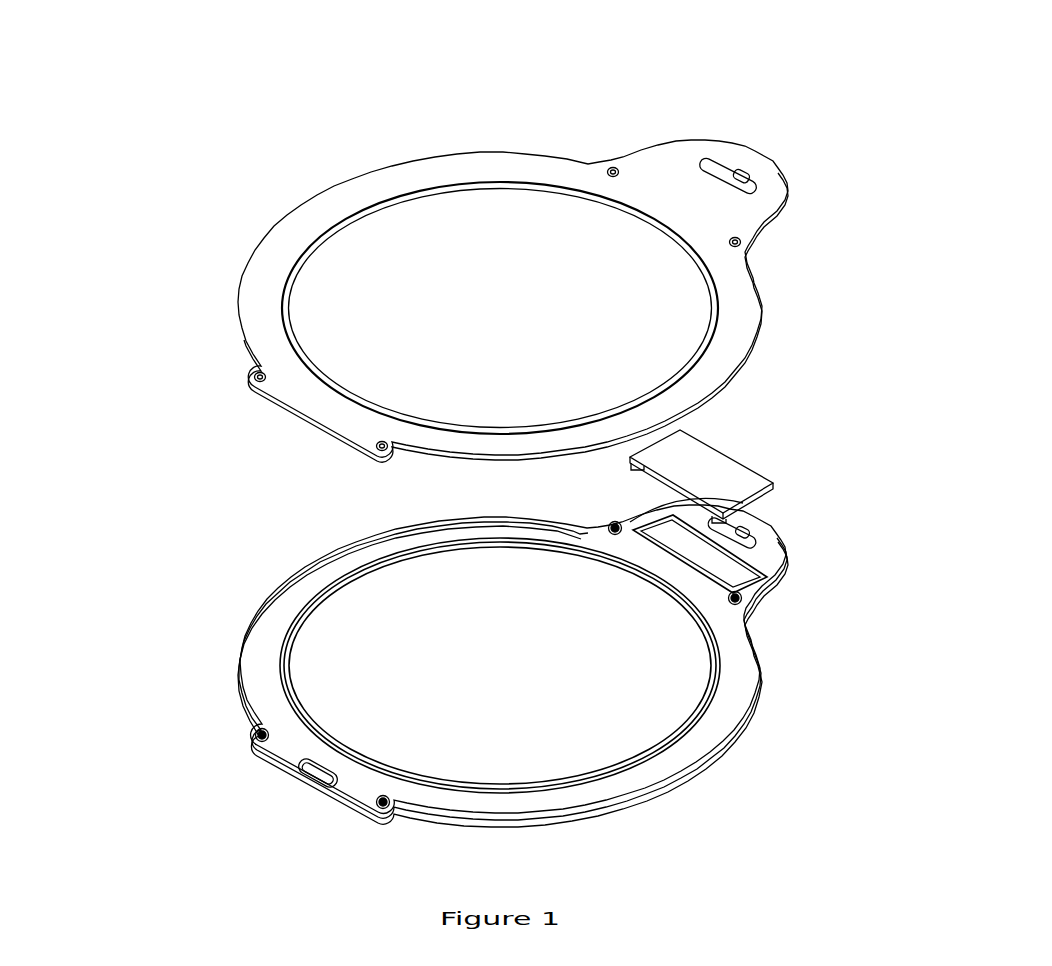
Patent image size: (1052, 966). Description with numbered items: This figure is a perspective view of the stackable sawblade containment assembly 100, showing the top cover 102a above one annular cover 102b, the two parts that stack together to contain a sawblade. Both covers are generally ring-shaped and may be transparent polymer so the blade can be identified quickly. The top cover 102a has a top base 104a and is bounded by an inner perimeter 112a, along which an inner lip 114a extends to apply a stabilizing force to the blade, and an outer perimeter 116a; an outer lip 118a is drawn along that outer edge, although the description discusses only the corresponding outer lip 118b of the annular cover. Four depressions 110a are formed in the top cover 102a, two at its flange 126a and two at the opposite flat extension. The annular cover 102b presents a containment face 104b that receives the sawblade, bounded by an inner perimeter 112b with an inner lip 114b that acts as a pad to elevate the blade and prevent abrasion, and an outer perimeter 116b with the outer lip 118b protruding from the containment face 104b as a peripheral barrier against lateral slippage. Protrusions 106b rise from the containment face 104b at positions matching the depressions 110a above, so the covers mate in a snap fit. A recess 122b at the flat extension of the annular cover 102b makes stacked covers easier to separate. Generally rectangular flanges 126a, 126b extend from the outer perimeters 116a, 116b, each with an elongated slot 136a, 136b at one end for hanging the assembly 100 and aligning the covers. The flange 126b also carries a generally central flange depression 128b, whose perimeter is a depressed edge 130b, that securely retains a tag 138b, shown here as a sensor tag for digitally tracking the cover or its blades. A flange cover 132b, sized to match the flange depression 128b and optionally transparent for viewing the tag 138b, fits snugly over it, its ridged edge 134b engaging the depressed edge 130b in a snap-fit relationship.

The stackable sawblade containment assembly 100 is at (136, 120).
The top cover 102a is at (242, 407).
The annular cover 102b is at (228, 607).
The top base 104a is at (286, 250).
The containment face 104b is at (286, 750).
The protrusion 106b is at (605, 525).
The depression 110a is at (612, 166).
The inner perimeter 112a is at (677, 357).
The inner perimeter 112b is at (672, 735).
The inner lip 114a is at (338, 228).
The inner lip 114b is at (700, 703).
The outer perimeter 116a is at (751, 367).
The outer perimeter 116b is at (745, 735).
The side wall 118a is at (728, 390).
The outer lip 118b is at (712, 765).
The recess 122b is at (313, 782).
The flange 126a is at (789, 190).
The flange 126b is at (795, 578).
The flange depression 128b is at (647, 530).
The depressed edge 130b is at (758, 586).
The flange cover 132b is at (718, 472).
The ridged edge 134b is at (748, 543).
The elongated slot 136a is at (737, 170).
The elongated slot 136b is at (752, 543).
The tag 138b is at (765, 560).